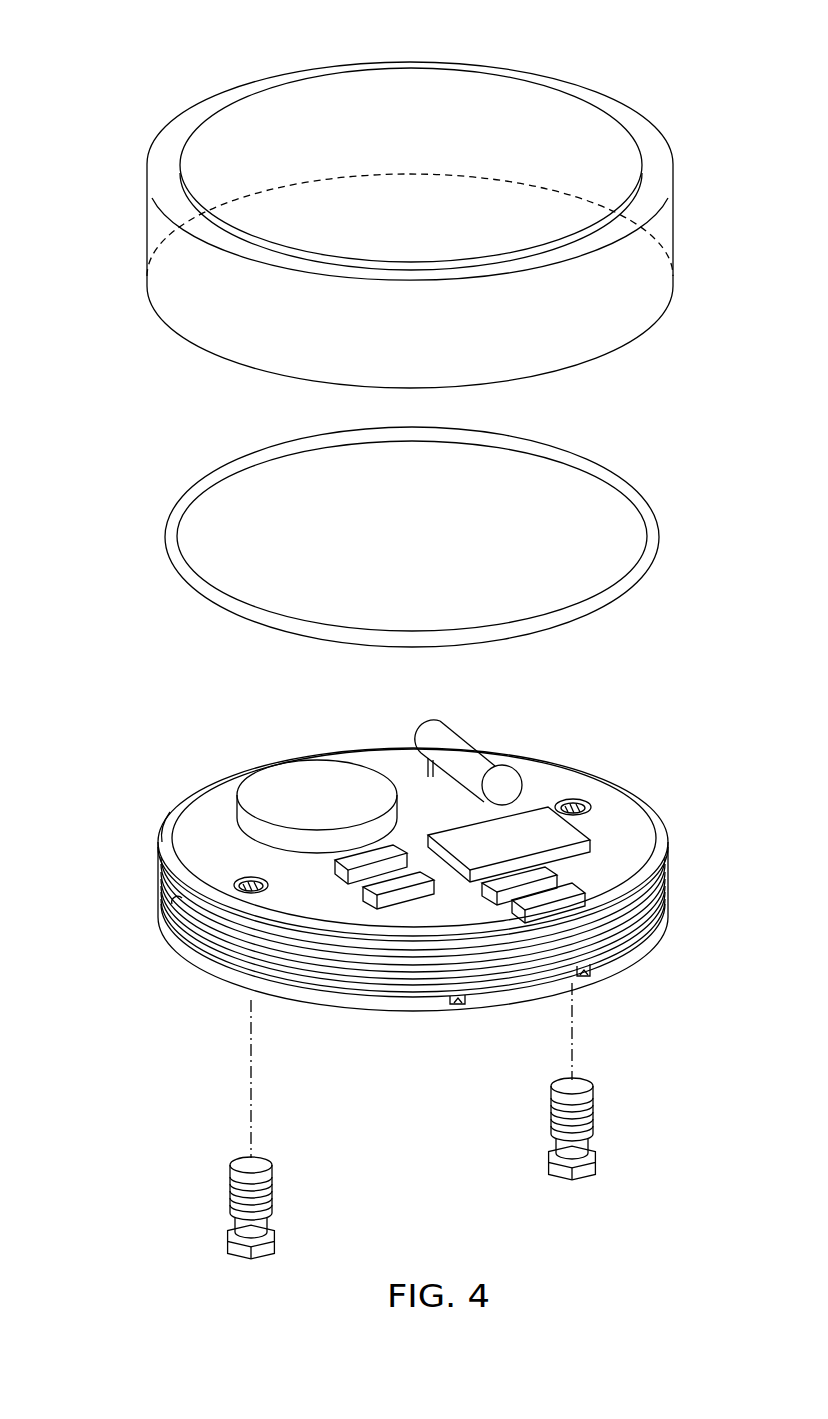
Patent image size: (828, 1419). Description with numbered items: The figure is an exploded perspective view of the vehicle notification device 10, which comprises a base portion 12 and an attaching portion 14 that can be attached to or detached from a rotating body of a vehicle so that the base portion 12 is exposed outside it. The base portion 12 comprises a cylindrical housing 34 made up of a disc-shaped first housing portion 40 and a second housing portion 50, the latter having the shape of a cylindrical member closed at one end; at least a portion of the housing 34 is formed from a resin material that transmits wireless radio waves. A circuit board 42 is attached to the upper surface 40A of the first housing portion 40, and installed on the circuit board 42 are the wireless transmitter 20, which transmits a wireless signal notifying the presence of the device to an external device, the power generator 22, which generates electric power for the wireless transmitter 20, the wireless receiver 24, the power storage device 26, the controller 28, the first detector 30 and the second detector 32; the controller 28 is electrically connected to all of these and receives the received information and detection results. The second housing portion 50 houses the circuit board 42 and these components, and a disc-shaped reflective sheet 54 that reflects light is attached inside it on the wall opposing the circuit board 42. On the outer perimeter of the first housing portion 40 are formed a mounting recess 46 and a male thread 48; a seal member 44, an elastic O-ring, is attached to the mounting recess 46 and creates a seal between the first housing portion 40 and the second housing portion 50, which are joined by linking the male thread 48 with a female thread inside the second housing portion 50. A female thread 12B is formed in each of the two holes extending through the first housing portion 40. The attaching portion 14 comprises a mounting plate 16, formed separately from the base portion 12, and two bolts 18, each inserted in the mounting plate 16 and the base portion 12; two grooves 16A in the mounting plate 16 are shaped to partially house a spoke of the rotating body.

The vehicle notification device 10 is at (118, 37).
The base portion 12 is at (178, 85).
The reflective sheet 54 is at (533, 110).
The housing 34 is at (358, 906).
The second housing portion 50 is at (147, 233).
The seal member 44 is at (207, 477).
The attaching portion 14 is at (382, 974).
The mounting plate 16 is at (623, 960).
The groove 16A is at (457, 1007).
The bolt 18 is at (275, 1238).
The first housing portion 40 is at (172, 834).
The upper surface 40A is at (180, 828).
The circuit board 42 is at (620, 823).
The mounting recess 46 is at (180, 900).
The male thread 48 is at (663, 908).
The female thread 12B is at (247, 880).
The wireless transmitter 20 is at (333, 870).
The power generator 22 is at (282, 770).
The wireless receiver 24 is at (362, 889).
The power storage device 26 is at (467, 740).
The controller 28 is at (452, 837).
The first detector 30 is at (482, 890).
The second detector 32 is at (510, 907).